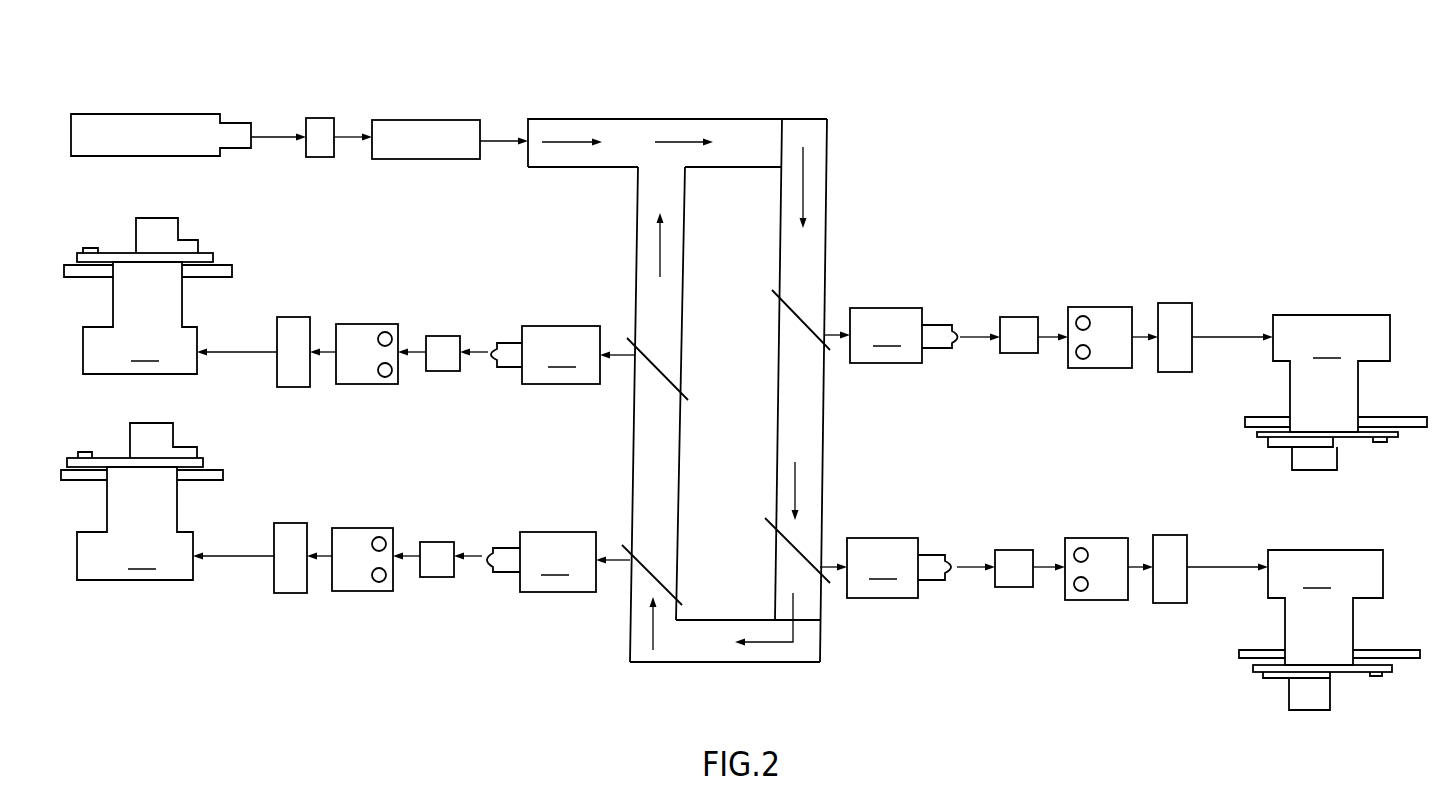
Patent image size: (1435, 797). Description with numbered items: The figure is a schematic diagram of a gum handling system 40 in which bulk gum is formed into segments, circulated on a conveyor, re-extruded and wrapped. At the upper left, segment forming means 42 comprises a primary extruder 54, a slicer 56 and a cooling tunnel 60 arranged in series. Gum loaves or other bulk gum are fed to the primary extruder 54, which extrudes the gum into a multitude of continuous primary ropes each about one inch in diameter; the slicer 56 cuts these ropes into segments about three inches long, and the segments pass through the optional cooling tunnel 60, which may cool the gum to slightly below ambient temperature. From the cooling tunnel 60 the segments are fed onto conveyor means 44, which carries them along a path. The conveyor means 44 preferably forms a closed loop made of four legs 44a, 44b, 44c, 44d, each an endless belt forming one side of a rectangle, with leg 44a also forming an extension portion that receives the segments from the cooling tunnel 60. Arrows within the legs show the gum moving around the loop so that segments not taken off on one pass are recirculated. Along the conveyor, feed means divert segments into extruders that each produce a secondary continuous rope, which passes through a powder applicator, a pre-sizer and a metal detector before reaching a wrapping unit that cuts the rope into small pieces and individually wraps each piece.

The system 40 is at (1125, 136).
The segment forming means 42 is at (374, 81).
The conveyor means 44 is at (820, 103).
The leg 44a is at (662, 117).
The leg 44b is at (823, 432).
The leg 44c is at (720, 663).
The leg 44d is at (632, 459).
The primary extruder 54 is at (167, 120).
The slicer 56 is at (322, 122).
The cooling tunnel 60 is at (437, 118).